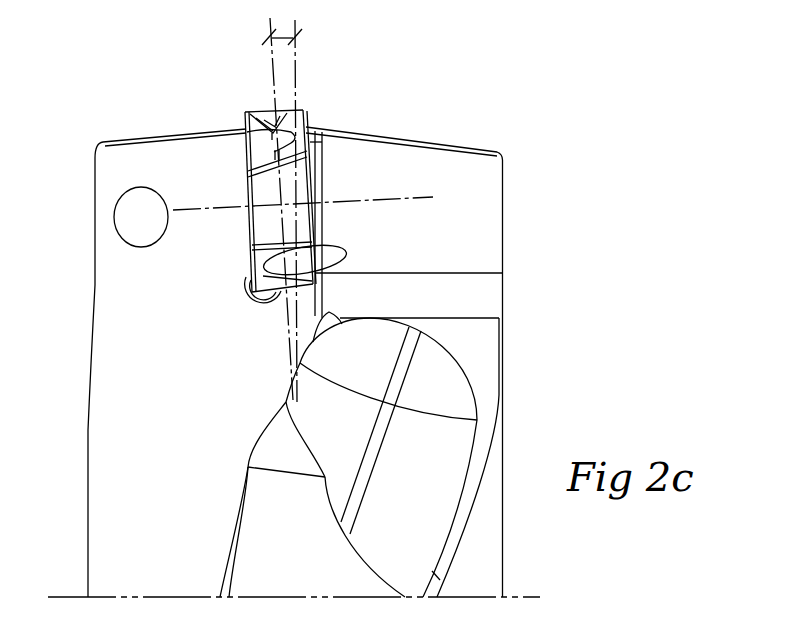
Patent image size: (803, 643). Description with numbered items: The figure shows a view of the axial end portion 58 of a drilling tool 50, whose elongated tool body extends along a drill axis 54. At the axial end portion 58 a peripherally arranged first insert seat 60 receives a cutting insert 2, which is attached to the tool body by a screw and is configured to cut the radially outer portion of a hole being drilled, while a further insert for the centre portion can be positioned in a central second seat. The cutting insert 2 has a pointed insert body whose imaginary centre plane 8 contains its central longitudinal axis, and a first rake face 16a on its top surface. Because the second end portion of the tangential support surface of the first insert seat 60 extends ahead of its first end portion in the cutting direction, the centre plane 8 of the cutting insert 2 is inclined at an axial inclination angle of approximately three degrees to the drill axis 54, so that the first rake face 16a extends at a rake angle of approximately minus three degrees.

The cutting insert 2 is at (265, 228).
The imaginary centre plane 8 is at (273, 81).
The first rake face 16a is at (316, 150).
The drilling tool 50 is at (522, 142).
The drill axis 54 is at (295, 60).
The axial end portion 58 is at (552, 269).
The first insert seat 60 is at (236, 182).